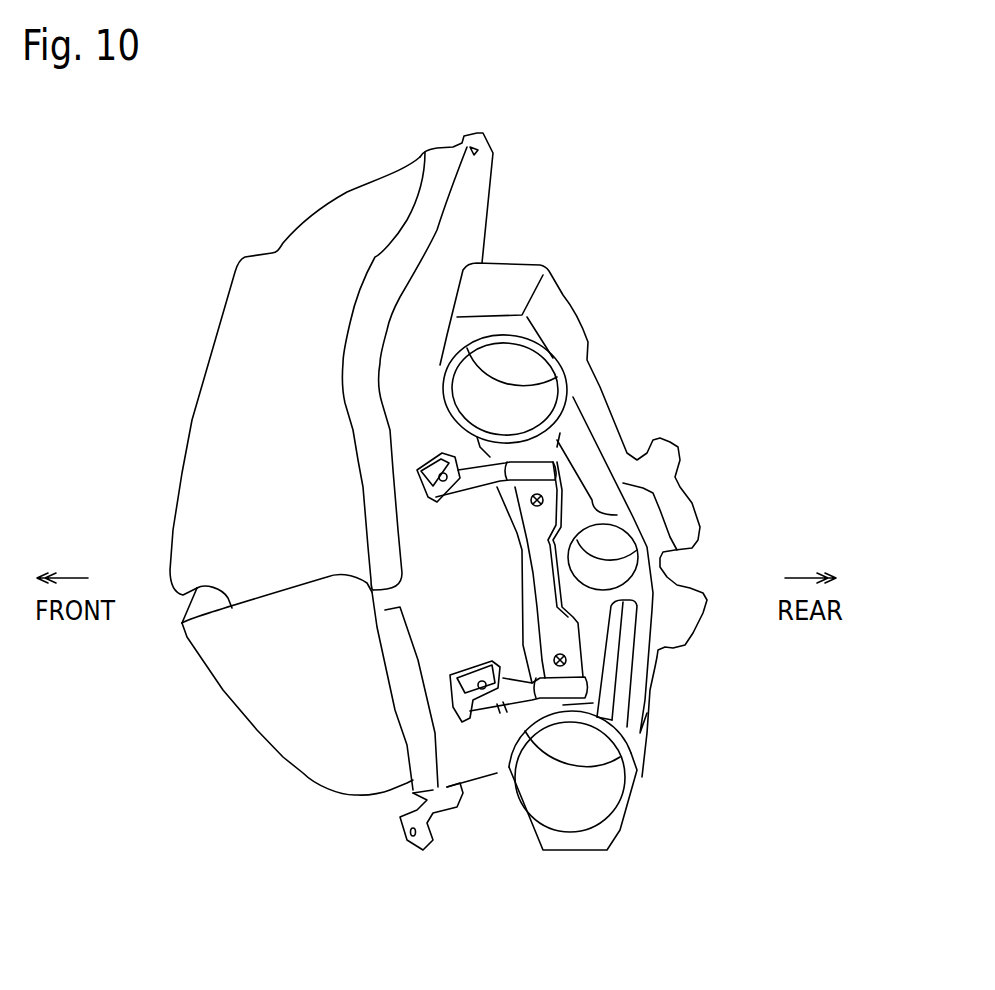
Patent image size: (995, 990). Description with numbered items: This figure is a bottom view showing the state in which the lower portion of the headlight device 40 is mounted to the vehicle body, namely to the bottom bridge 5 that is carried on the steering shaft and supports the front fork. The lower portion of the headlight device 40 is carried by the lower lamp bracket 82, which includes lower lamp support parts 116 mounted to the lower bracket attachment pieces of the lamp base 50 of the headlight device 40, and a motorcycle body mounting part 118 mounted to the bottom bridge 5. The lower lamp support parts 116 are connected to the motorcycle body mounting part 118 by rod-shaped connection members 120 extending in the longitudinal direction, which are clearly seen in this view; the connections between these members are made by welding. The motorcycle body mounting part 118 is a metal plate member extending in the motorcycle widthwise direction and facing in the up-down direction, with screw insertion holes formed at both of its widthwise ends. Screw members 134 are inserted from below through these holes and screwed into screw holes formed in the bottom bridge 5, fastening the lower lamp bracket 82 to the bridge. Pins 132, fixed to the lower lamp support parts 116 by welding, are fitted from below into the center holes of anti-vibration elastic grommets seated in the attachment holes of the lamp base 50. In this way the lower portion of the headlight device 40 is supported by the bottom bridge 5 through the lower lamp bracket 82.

The bottom bridge 5 is at (558, 304).
The headlight device 40 is at (277, 203).
The lamp base 50 is at (477, 180).
The lower lamp bracket 82 is at (573, 496).
The lower lamp support parts 116 is at (480, 478).
The motorcycle body mounting part 118 is at (553, 632).
The rod-shaped connection members 120 is at (497, 440).
The pins 132 is at (427, 453).
The screw members 134 is at (541, 507).